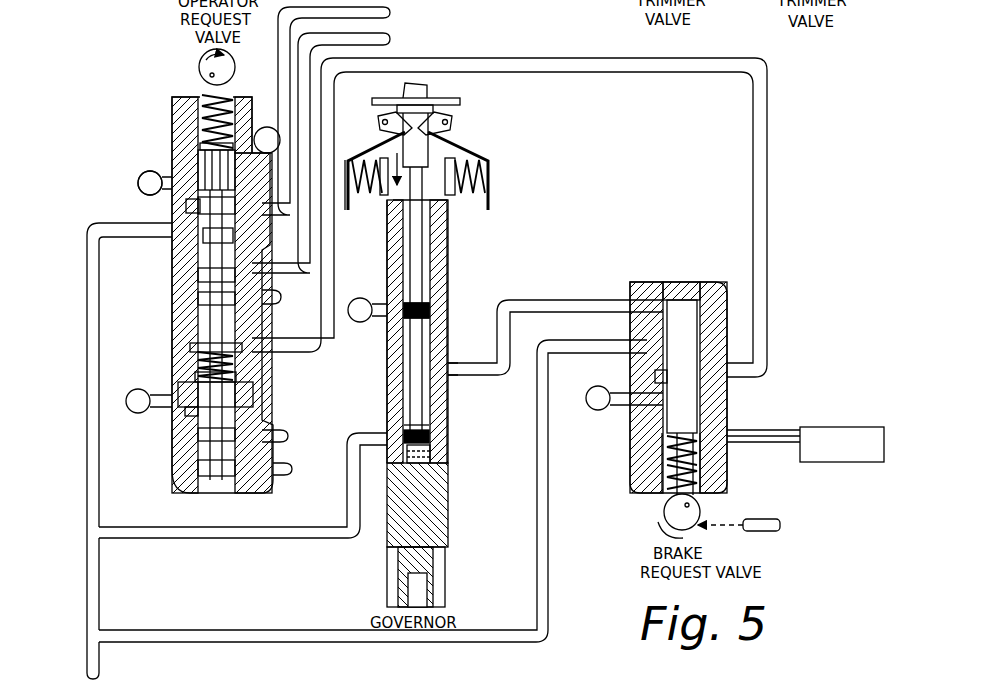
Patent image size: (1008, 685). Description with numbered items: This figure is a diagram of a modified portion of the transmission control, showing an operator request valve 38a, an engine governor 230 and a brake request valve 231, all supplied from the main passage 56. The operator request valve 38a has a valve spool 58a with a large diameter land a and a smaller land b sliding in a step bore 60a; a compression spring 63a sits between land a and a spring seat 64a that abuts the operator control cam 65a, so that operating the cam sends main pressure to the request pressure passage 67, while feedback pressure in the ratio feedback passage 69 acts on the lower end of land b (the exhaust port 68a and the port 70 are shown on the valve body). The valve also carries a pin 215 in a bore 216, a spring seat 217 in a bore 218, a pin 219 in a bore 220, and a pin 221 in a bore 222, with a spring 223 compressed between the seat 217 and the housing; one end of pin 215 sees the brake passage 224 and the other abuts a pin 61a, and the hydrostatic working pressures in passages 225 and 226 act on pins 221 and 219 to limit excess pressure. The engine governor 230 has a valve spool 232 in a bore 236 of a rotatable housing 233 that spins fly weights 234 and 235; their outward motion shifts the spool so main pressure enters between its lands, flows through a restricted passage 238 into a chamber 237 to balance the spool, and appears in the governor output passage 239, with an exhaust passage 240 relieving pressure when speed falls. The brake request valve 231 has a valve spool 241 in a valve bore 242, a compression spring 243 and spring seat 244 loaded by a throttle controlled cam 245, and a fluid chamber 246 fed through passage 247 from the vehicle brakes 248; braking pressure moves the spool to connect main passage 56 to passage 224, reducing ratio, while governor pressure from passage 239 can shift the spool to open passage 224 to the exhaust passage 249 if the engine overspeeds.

The main passage 56 is at (88, 250).
The request pressure passage 67 is at (390, 13).
The ratio feedback passage 69 is at (390, 39).
The brake passage 224 is at (583, 73).
The operator request valve 38a is at (252, 98).
The operator control cam 65a is at (199, 68).
The spring seat 64a is at (203, 108).
The compression spring 63a is at (205, 146).
The valve land a is at (200, 165).
The valve land b is at (200, 268).
The exhaust port 68a is at (138, 181).
The step bore 60a is at (190, 205).
The valve spool 58a is at (203, 238).
The pin 61a is at (200, 281).
The bore 216 is at (205, 300).
The bore 218 is at (198, 355).
The port 70 is at (281, 297).
The pin 215 is at (240, 341).
The spring 223 is at (242, 348).
The spring seat 217 is at (233, 362).
The bore 220 is at (253, 395).
The pin 219 is at (190, 412).
The passage 226 is at (289, 436).
The bore 222 is at (205, 435).
The pin 221 is at (205, 470).
The passage 225 is at (292, 472).
The rotatable housing 233 is at (445, 265).
The fly weight 234 is at (490, 175).
The fly weight 235 is at (347, 212).
The exhaust passage 240 is at (366, 298).
The valve spool 232 is at (428, 330).
The bore 236 is at (450, 368).
The restricted passage 238 is at (422, 432).
The chamber 237 is at (430, 452).
The engine governor 230 is at (450, 515).
The governor output passage 239 is at (600, 300).
The valve spool 241 is at (700, 383).
The valve bore 242 is at (655, 375).
The exhaust passage 249 is at (593, 410).
The fluid chamber 246 is at (728, 437).
The vehicle brakes 248 is at (845, 427).
The passage 247 is at (770, 444).
The compression spring 243 is at (668, 455).
The spring seat 244 is at (668, 478).
The brake request valve 231 is at (655, 490).
The throttle controlled cam 245 is at (705, 515).